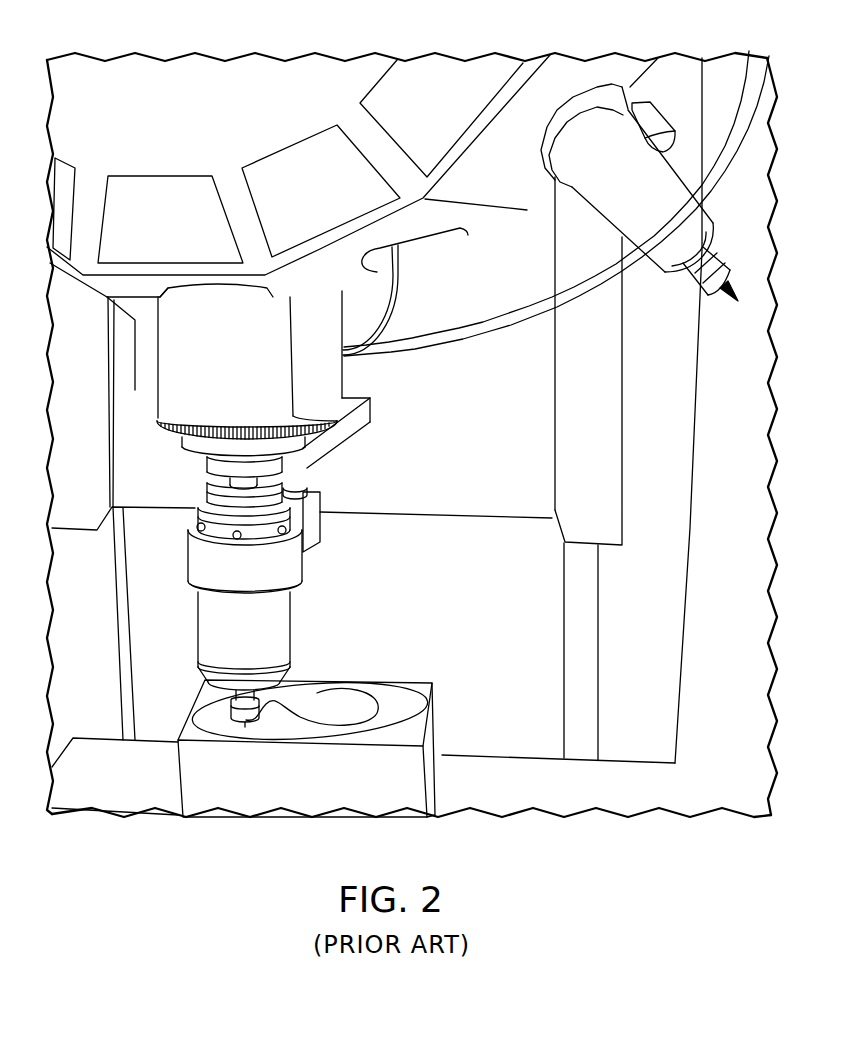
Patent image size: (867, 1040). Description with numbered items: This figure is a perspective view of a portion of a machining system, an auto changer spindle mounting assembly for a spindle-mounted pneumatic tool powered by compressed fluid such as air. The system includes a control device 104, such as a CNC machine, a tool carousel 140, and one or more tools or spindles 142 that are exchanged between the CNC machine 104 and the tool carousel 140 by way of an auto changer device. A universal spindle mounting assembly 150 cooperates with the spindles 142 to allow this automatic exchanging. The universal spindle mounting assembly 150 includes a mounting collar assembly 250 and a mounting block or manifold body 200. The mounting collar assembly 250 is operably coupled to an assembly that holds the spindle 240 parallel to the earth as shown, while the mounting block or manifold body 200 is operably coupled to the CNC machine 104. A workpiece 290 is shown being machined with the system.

The tool carousel 140 is at (196, 76).
The spindle 142 is at (623, 193).
The control device 104 is at (330, 367).
The mounting block or manifold body 200 is at (357, 423).
The universal spindle mounting assembly 150 is at (301, 463).
The mounting collar assembly 250 is at (177, 538).
The spindle 240 is at (278, 632).
The workpiece 290 is at (303, 796).